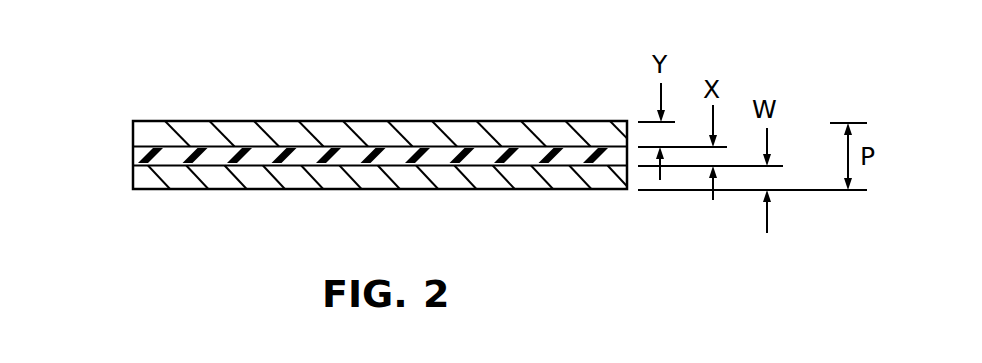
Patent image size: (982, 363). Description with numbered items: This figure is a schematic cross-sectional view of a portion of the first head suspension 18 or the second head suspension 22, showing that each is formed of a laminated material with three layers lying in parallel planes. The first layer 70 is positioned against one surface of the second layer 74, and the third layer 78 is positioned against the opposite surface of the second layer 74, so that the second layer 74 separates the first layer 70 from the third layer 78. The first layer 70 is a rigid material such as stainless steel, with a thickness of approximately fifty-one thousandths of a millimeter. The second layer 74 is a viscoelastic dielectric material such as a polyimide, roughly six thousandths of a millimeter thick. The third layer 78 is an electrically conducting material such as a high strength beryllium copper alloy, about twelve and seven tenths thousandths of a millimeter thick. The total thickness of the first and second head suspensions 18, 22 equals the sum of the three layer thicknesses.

The first head suspension 18 is at (268, 114).
The second head suspension 22 is at (380, 155).
The third layer 78 is at (133, 132).
The second layer 74 is at (133, 155).
The first layer 70 is at (133, 177).